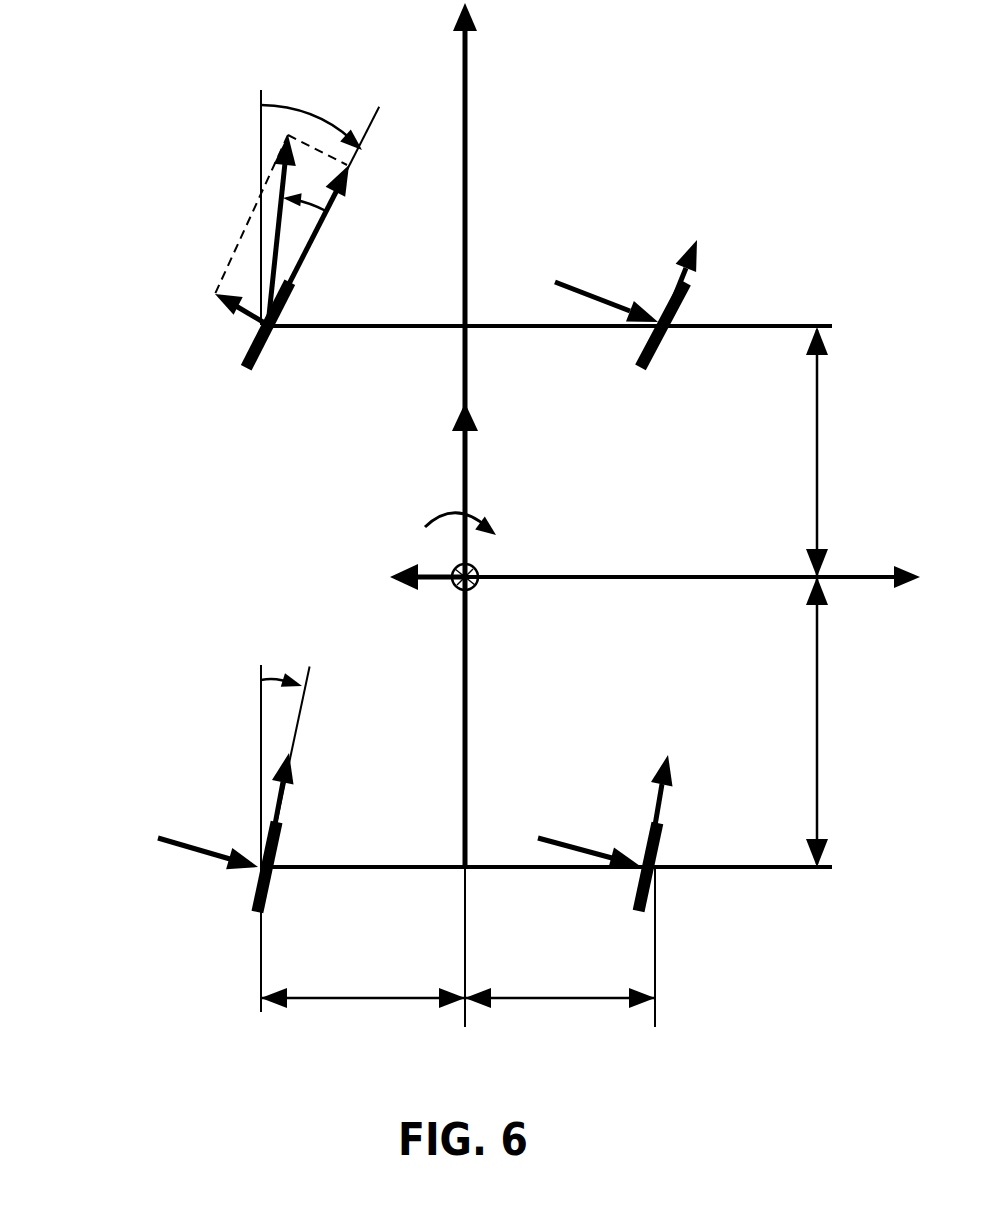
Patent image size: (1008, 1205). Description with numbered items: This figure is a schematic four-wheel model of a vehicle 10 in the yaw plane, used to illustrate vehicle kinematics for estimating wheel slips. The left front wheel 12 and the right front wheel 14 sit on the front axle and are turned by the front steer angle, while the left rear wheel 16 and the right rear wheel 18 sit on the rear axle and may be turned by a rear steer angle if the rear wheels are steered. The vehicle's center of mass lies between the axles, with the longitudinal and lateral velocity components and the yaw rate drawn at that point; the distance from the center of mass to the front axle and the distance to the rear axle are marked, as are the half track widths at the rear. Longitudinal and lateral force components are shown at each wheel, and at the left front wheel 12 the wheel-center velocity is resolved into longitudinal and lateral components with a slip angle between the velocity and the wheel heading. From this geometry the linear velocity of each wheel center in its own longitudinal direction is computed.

The vehicle 10 is at (98, 577).
The left front wheel 12 is at (279, 330).
The right front wheel 14 is at (672, 332).
The left rear wheel 16 is at (240, 895).
The right rear wheel 18 is at (662, 871).